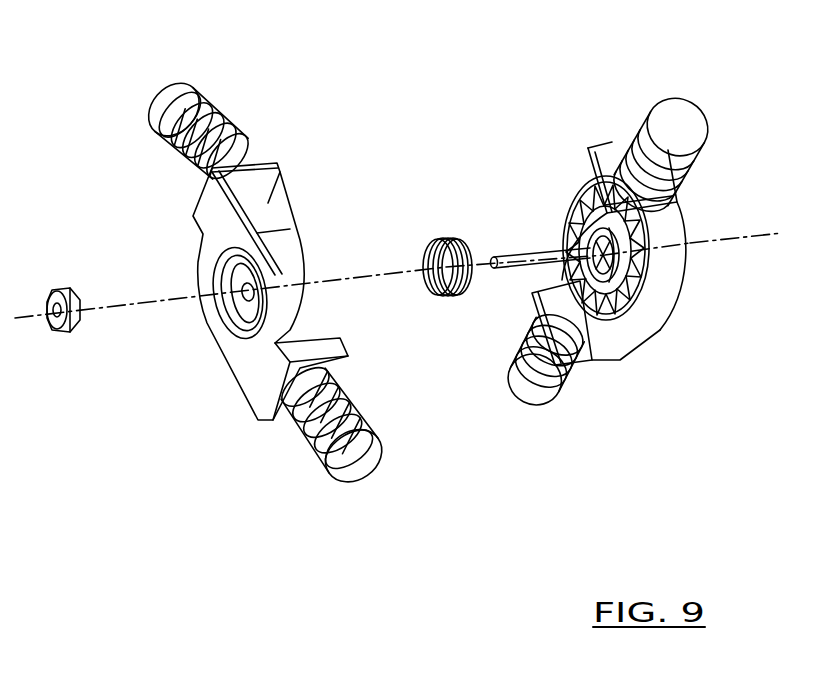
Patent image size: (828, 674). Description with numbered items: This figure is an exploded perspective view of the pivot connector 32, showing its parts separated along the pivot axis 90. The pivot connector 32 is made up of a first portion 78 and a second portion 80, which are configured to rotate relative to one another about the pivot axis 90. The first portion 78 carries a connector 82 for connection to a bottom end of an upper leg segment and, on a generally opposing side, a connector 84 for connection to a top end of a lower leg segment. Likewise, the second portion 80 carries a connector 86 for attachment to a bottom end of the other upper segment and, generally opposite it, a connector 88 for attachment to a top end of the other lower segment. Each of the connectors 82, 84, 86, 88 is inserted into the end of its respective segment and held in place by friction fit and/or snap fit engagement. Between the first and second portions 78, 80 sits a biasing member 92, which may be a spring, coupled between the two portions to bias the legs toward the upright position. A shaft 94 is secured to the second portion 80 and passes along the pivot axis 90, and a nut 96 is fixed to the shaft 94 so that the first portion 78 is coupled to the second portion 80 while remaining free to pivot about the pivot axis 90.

The pivot connector 32 is at (727, 435).
The first portion 78 is at (237, 355).
The second portion 80 is at (660, 272).
The connector 82 is at (232, 118).
The connector 84 is at (328, 467).
The connector 86 is at (697, 101).
The connector 88 is at (541, 406).
The pivot axis 90 is at (763, 233).
The biasing member 92 is at (444, 240).
The shaft 94 is at (518, 260).
The nut 96 is at (67, 290).